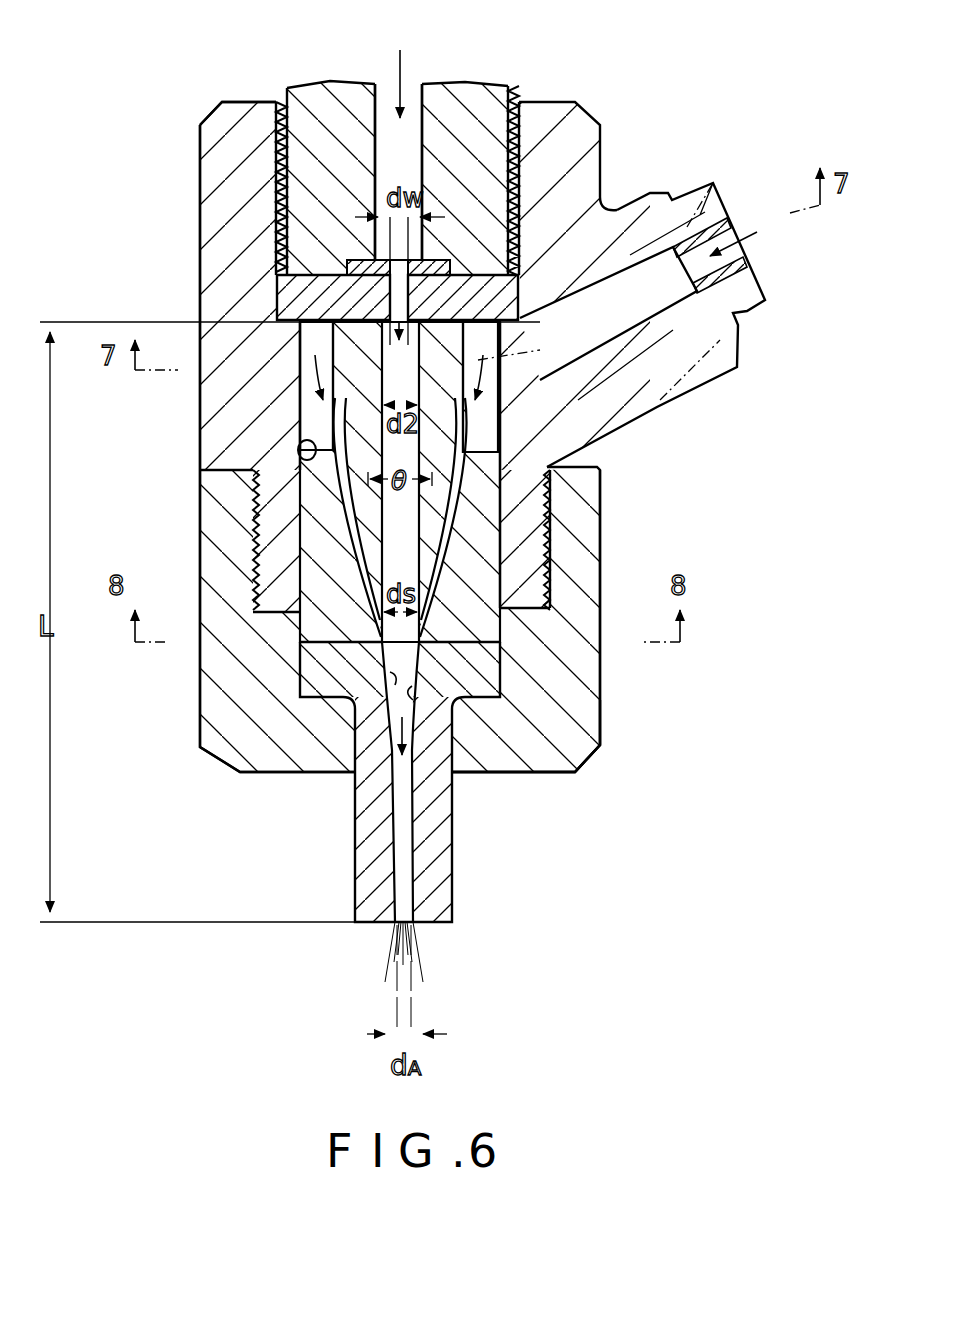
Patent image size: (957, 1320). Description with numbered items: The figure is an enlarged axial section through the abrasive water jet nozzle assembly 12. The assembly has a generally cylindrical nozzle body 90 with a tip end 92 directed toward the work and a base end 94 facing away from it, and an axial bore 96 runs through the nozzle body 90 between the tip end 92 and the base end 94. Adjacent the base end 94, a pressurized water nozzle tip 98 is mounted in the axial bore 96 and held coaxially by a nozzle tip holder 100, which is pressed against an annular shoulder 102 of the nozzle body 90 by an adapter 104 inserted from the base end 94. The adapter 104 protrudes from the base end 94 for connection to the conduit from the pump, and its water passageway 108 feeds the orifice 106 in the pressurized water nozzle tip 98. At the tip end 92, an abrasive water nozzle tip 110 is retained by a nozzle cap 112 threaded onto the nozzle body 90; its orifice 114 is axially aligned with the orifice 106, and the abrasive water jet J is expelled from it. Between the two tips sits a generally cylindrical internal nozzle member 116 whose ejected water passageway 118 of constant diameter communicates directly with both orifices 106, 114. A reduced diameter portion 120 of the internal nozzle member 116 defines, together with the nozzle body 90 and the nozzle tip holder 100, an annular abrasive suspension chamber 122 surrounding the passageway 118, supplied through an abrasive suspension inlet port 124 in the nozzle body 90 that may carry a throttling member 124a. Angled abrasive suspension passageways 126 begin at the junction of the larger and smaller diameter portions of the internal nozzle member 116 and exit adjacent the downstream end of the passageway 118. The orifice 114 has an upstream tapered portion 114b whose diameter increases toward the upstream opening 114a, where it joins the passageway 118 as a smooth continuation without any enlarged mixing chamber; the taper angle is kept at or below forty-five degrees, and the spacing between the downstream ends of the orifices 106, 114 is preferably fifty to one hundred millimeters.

The abrasive water jet nozzle assembly 12 is at (152, 82).
The nozzle body 90 is at (190, 182).
The tip end 92 is at (540, 630).
The base end 94 is at (246, 100).
The axial bore 96 is at (300, 450).
The pressurized water nozzle tip 98 is at (437, 258).
The nozzle tip holder 100 is at (522, 300).
The annular shoulder 102 is at (290, 300).
The adapter 104 is at (330, 85).
The orifice 106 is at (393, 267).
The water passageway 108 is at (427, 85).
The abrasive water nozzle tip 110 is at (449, 846).
The nozzle cap 112 is at (593, 758).
The orifice 114 is at (400, 836).
The upstream opening 114a is at (355, 705).
The upstream tapered portion 114b is at (416, 702).
The internal nozzle member 116 is at (305, 630).
The ejected water passageway 118 is at (470, 408).
The reduced diameter portion 120 is at (503, 337).
The abrasive suspension chamber 122 is at (307, 342).
The abrasive suspension inlet port 124 is at (738, 212).
The throttling member 124a is at (745, 303).
The abrasive suspension passageways 126 is at (345, 505).
The jet J is at (420, 950).